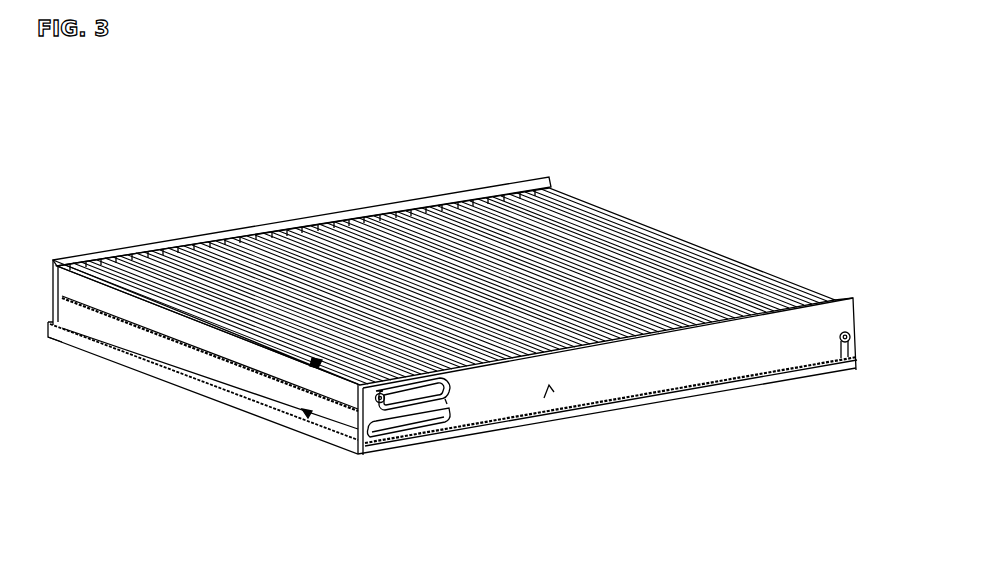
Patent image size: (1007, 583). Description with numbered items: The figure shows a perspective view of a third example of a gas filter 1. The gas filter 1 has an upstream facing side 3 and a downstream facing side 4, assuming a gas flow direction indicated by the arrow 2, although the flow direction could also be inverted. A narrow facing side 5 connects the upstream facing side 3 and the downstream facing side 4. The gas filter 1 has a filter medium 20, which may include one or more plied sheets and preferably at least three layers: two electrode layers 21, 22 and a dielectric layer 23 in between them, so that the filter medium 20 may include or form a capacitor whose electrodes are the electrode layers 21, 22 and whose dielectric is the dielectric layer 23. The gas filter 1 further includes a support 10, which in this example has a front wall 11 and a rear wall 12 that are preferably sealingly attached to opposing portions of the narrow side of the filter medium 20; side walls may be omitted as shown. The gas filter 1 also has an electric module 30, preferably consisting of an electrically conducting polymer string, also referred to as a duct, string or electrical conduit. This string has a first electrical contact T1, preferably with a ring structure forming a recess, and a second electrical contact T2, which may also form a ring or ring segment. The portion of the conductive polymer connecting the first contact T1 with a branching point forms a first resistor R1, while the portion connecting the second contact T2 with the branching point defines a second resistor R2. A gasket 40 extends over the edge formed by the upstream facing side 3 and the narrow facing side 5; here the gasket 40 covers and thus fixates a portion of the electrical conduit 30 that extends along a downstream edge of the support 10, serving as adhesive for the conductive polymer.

The gas filter 1 is at (254, 205).
The arrow 2 is at (371, 92).
The upstream facing side 3 is at (503, 222).
The filter medium 20 is at (662, 231).
The front wall 11 is at (60, 340).
The downstream facing side 4 is at (91, 356).
The dielectric layer 23 is at (182, 352).
The electrode layer 22 is at (233, 355).
The electrode layer 21 is at (290, 395).
The second electrical contact T2 is at (367, 395).
The support 10 is at (400, 438).
The second resistor R2 is at (431, 412).
The electric module 30 is at (452, 415).
The narrow facing side 5 is at (549, 398).
The rear wall 12 is at (592, 383).
The gasket 40 is at (637, 405).
The first resistor R1 is at (690, 395).
The first electrical contact T1 is at (838, 358).